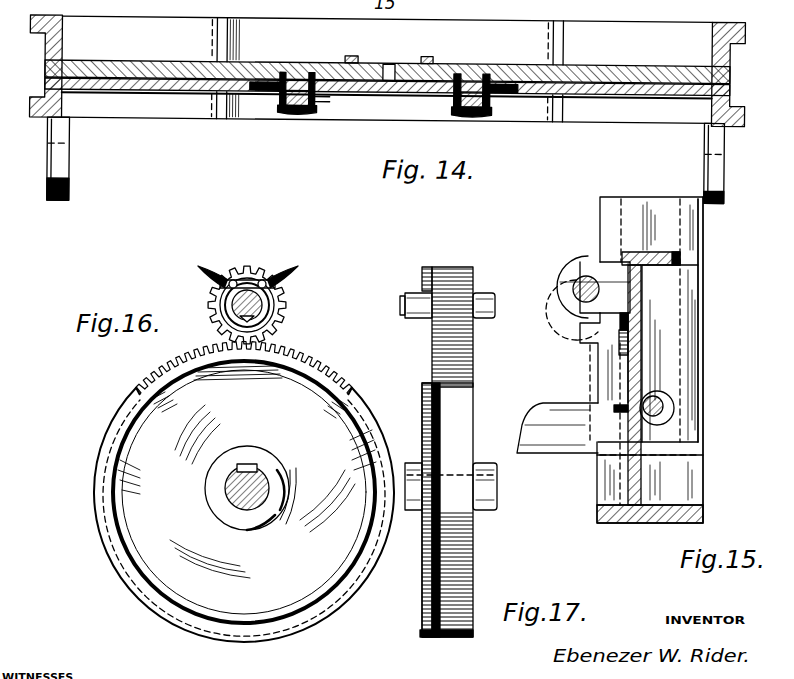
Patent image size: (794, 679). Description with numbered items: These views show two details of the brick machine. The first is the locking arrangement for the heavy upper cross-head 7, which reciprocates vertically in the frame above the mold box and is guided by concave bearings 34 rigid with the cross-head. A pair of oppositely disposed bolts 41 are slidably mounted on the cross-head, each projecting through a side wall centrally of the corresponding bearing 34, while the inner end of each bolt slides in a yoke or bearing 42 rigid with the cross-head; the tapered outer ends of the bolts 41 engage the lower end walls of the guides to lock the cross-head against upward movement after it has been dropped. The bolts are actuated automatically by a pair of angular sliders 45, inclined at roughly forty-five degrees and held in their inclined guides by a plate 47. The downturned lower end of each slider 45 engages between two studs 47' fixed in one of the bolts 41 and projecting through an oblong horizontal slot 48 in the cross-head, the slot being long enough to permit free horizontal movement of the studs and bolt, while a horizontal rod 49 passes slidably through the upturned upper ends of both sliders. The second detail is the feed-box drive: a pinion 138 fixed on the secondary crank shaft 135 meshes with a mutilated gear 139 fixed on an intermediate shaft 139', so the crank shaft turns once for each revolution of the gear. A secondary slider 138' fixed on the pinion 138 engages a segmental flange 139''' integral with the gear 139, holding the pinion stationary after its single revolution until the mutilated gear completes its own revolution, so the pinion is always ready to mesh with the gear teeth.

In FIG. 14, the upper cross-head 7 is at (175, 118).
In FIG. 15, the upper cross-head 7 is at (606, 222).
In FIG. 14, the concave bearings 34 is at (46, 67).
In FIG. 15, the concave bearings 34 is at (681, 231).
In FIG. 14, the bolts 41 is at (151, 60).
In FIG. 15, the bolts 41 is at (648, 402).
In FIG. 14, the yoke or bearing 42 is at (422, 53).
In FIG. 15, the yoke or bearing 42 is at (673, 406).
In FIG. 14, the angular sliders 45 is at (287, 110).
In FIG. 15, the angular sliders 45 is at (612, 372).
In FIG. 15, the plate 47 is at (564, 415).
In FIG. 14, the studs 47' is at (383, 102).
In FIG. 15, the studs 47' is at (599, 414).
In FIG. 14, the oblong horizontal slot 48 is at (286, 70).
In FIG. 15, the horizontal rod 49 is at (578, 283).
In FIG. 16, the secondary crank shaft 135 is at (272, 314).
In FIG. 17, the secondary crank shaft 135 is at (405, 304).
In FIG. 16, the pinion 138 is at (266, 305).
In FIG. 17, the pinion 138 is at (468, 327).
In FIG. 16, the secondary slider 138' is at (252, 265).
In FIG. 16, the mutilated gear 139 is at (244, 492).
In FIG. 17, the mutilated gear 139 is at (467, 506).
In FIG. 16, the intermediate shaft 139' is at (250, 477).
In FIG. 17, the intermediate shaft 139' is at (475, 487).
In FIG. 16, the segmental flange 139''' is at (220, 518).